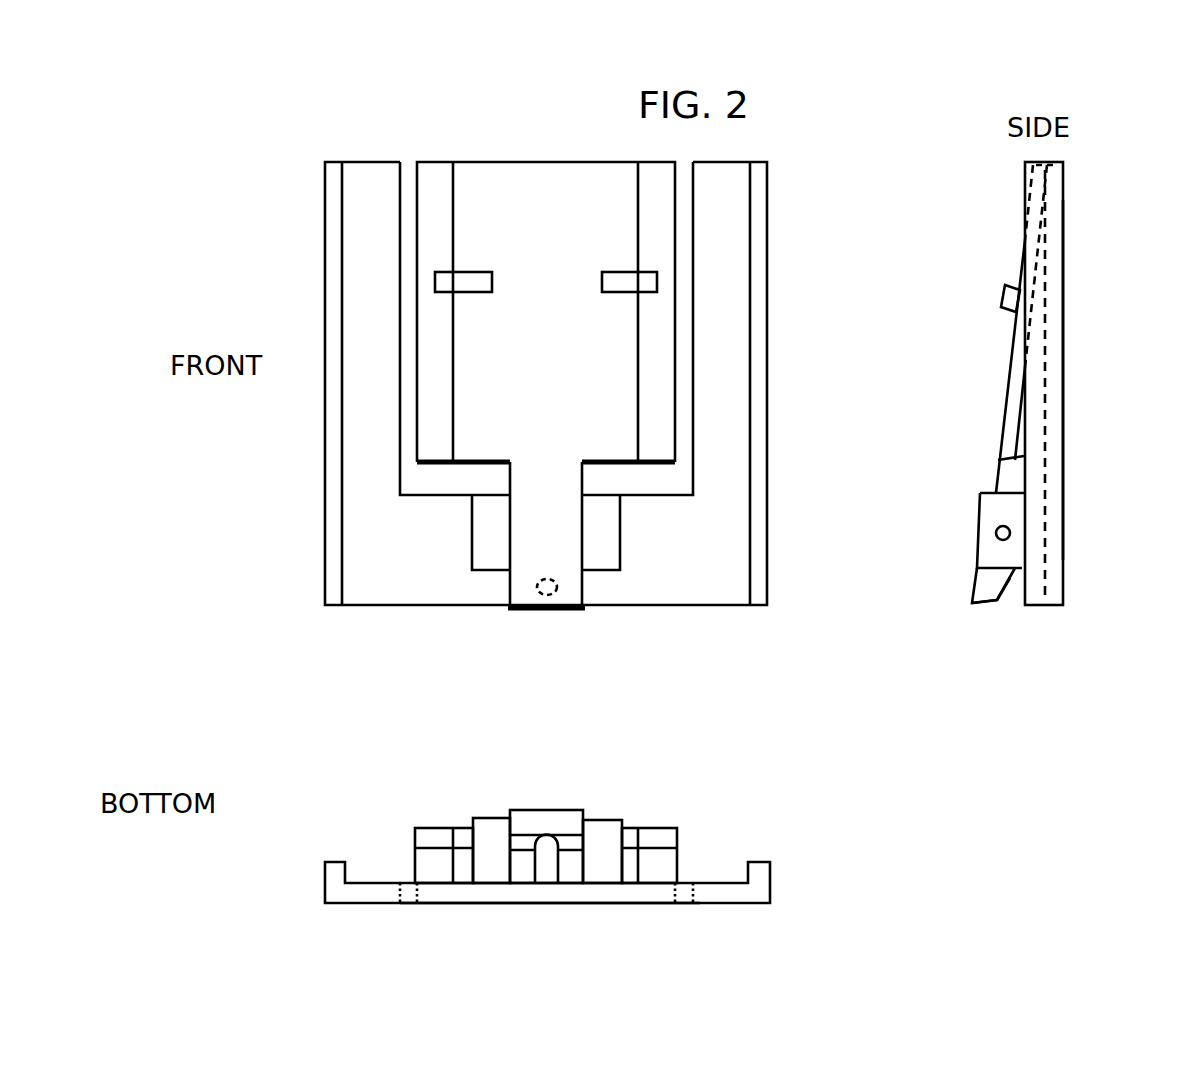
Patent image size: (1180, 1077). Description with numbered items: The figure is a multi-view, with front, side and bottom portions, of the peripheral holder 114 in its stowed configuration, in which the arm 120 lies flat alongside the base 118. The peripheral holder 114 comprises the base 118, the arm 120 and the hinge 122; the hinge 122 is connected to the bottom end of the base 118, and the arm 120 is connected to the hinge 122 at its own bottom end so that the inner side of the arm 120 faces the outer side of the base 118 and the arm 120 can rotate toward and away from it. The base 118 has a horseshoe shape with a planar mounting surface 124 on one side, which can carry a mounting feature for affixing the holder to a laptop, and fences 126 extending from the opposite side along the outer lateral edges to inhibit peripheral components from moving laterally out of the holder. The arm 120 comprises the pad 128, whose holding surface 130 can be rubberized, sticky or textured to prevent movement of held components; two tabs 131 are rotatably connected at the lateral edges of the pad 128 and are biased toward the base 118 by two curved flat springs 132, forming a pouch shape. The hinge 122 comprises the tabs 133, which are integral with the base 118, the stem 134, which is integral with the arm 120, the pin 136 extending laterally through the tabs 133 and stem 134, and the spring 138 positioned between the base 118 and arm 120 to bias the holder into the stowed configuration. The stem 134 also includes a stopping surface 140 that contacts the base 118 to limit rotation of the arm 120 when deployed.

The peripheral holder 114 is at (272, 142).
The base 118 is at (321, 309).
The arm 120 is at (521, 158).
The hinge 122 is at (470, 574).
The mounting surface 124 is at (1063, 375).
The fences 126 is at (340, 525).
The pad 128 is at (568, 308).
The holding surface 130 is at (1065, 248).
The tabs 131 is at (434, 162).
The curved flat springs 132 is at (630, 268).
The tabs 133 is at (470, 525).
The stem 134 is at (571, 535).
The pin 136 is at (997, 532).
The spring 138 is at (560, 596).
The stopping surface 140 is at (1000, 605).